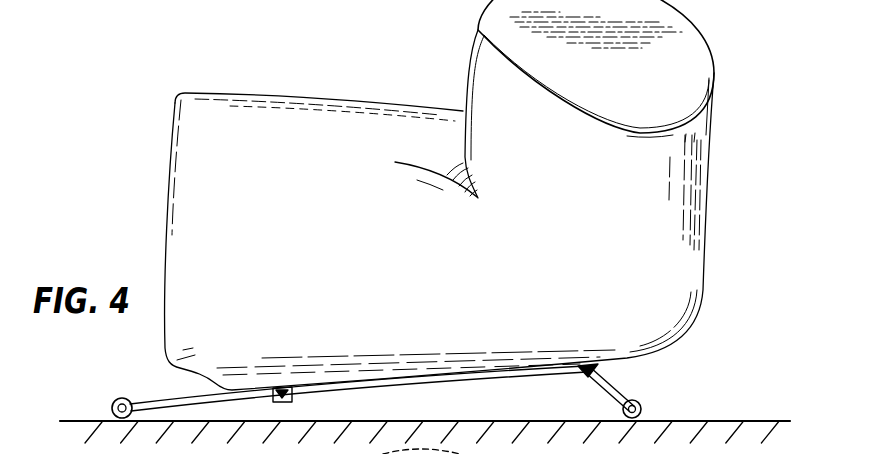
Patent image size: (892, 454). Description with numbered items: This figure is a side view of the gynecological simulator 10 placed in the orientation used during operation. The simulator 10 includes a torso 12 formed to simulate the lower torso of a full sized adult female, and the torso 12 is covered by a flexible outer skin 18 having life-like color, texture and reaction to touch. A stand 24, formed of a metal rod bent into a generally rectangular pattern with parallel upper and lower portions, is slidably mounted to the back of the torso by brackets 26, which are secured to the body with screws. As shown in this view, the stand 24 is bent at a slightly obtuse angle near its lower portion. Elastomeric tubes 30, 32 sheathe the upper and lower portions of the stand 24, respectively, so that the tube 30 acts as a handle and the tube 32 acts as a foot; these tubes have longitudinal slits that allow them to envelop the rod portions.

The gynecological simulator 10 is at (752, 73).
The torso 12 is at (706, 271).
The flexible outer skin 18 is at (662, 208).
The stand 24 is at (626, 390).
The brackets 26 is at (292, 396).
The elastomeric tube 30 is at (115, 400).
The elastomeric tube 32 is at (644, 403).